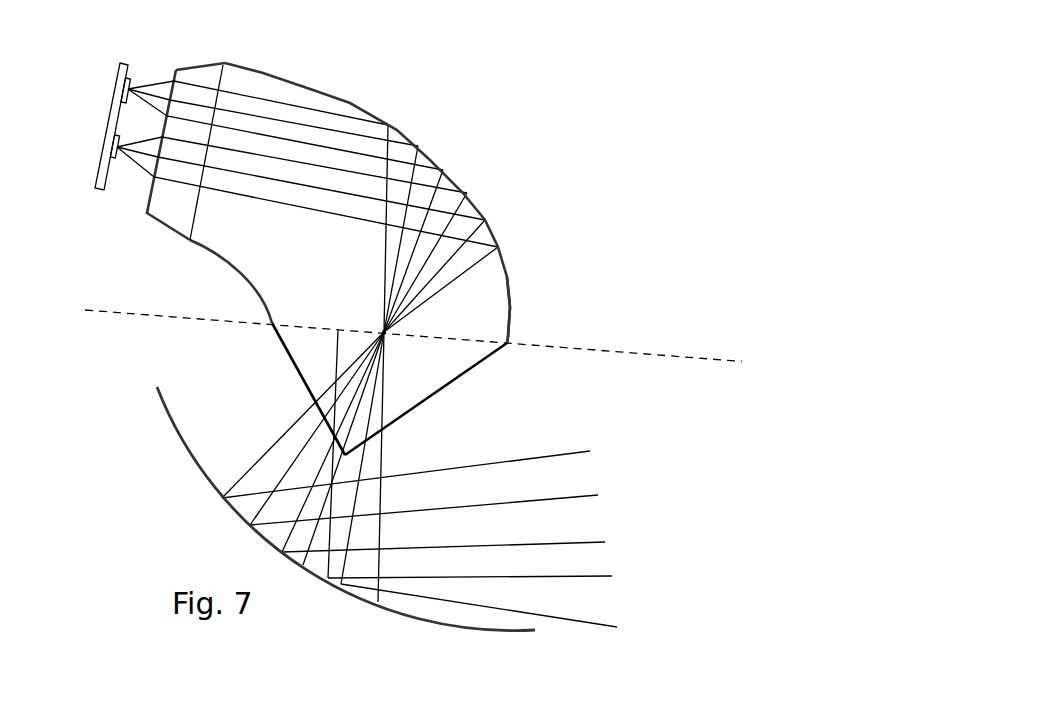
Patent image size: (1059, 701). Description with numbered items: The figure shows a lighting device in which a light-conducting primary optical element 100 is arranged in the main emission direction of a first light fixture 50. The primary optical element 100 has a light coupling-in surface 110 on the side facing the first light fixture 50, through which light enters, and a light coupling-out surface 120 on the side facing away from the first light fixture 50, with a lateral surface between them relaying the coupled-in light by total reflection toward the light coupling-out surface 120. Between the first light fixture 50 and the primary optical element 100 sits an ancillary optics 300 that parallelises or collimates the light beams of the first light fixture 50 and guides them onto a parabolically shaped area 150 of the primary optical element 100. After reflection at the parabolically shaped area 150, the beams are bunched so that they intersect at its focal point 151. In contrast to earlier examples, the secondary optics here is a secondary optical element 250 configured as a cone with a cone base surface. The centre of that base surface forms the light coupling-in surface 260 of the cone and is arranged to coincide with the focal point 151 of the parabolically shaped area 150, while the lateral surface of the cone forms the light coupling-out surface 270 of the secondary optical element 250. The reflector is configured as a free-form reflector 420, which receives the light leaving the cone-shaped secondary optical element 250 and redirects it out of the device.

The first light fixture 50 is at (117, 98).
The primary optical element 100 is at (258, 222).
The light coupling-in surface 110 is at (198, 203).
The light coupling-out surface 120 is at (338, 329).
The parabolically shaped area 150 is at (470, 191).
The focal point 151 is at (508, 288).
The secondary optical element 250 is at (433, 372).
The light coupling-in surface of the secondary optical element 260 is at (306, 327).
The light coupling-out surface of the secondary optical element 270 is at (398, 418).
The ancillary optics 300 is at (207, 77).
The free-form reflector 420 is at (232, 513).